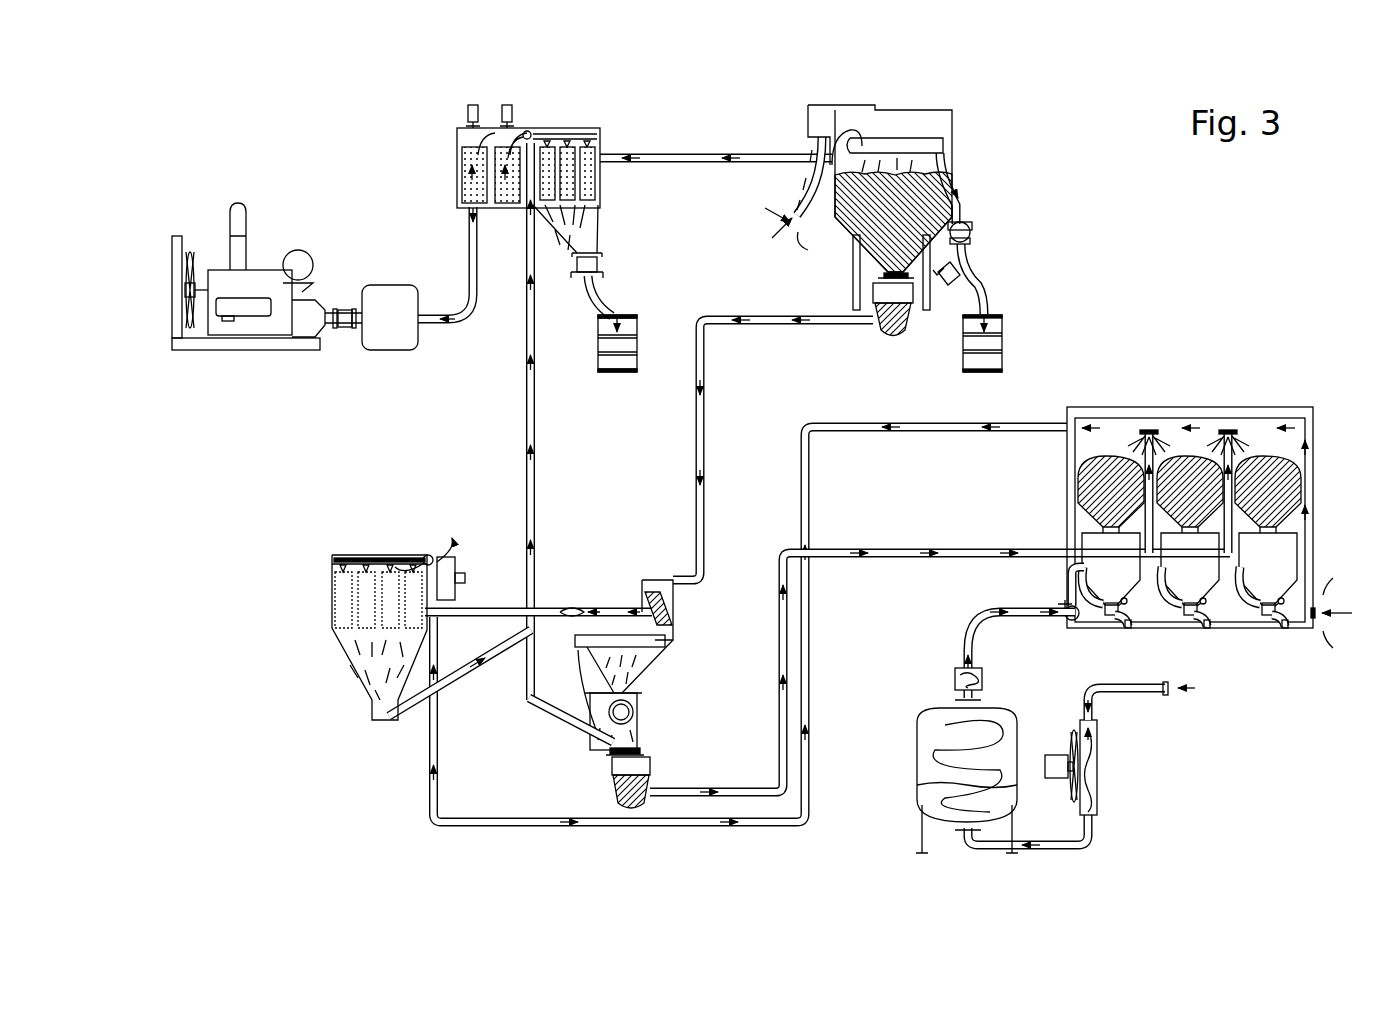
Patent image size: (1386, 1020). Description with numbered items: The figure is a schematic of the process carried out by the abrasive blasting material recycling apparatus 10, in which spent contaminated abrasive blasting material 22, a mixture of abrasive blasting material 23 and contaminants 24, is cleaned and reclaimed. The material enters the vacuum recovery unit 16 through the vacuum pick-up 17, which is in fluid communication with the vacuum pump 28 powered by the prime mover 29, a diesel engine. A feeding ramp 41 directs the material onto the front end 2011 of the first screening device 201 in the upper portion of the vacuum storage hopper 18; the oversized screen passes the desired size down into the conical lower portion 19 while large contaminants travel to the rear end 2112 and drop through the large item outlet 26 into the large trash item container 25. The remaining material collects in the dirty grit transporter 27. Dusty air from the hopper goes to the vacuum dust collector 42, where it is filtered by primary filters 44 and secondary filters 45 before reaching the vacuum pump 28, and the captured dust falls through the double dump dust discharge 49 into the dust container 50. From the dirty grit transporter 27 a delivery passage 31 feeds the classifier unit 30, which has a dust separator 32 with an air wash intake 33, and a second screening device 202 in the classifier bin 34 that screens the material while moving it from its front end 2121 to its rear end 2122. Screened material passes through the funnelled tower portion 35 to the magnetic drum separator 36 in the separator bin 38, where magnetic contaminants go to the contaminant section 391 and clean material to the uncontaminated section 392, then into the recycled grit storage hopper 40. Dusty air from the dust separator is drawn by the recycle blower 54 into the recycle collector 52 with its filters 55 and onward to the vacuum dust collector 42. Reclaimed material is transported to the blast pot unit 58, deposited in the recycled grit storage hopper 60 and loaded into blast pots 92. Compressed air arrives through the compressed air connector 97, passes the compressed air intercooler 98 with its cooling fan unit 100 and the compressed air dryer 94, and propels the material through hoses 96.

The apparatus 10 is at (452, 423).
The vacuum recovery unit 16 is at (766, 433).
The vacuum pick-up 17 is at (800, 178).
The vacuum storage hopper 18 is at (936, 141).
The conical lower portion 19 is at (853, 285).
The first screening device 201 is at (910, 132).
The front end of primary screening device 2011 is at (866, 150).
The second screening device 202 is at (614, 632).
The rear end of primary screening device 2112 is at (930, 140).
The front end of secondary screening device 2121 is at (668, 650).
The rear end of secondary screening device 2122 is at (588, 630).
The contaminated abrasive blasting material 22 is at (862, 222).
The abrasive blasting material 23 is at (640, 735).
The contaminants 24 is at (590, 745).
The large trash item container 25 is at (1003, 343).
The large item outlet 26 is at (963, 197).
The dirty grit transporter 27 is at (892, 338).
The vacuum pump 28 is at (388, 300).
The prime mover 29 is at (268, 285).
The classifier unit 30 is at (929, 667).
The delivery passage 31 is at (702, 415).
The dust separator 32 is at (645, 580).
The air wash intake 33 is at (678, 600).
The classifier bin 34 is at (528, 672).
The funnelled tower portion 35 is at (660, 668).
The magnetic drum separator 36 is at (637, 712).
The separator bin 38 is at (572, 725).
The contaminant section 391 is at (608, 760).
The uncontaminated section 392 is at (642, 757).
The recycled grit storage hopper 40 is at (645, 814).
The feeding ramp 41 is at (828, 135).
The vacuum dust collector 42 is at (529, 164).
The primary filters 44 is at (590, 172).
The secondary filters 45 is at (470, 170).
The double dump dust discharge 49 is at (600, 262).
The dust container 50 is at (638, 342).
The recycle collector 52 is at (393, 611).
The recycle blower 54 is at (456, 560).
The filters 55 is at (342, 590).
The blast pot unit 58 is at (1190, 511).
The recycled grit storage hopper 60 is at (1256, 428).
The blast pots 92 is at (1300, 553).
The compressed air dryer 94 is at (915, 756).
The hoses 96 is at (1121, 627).
The compressed air connector 97 is at (1165, 692).
The compressed air intercooler 98 is at (1084, 760).
The cooling fan unit 100 is at (1052, 760).